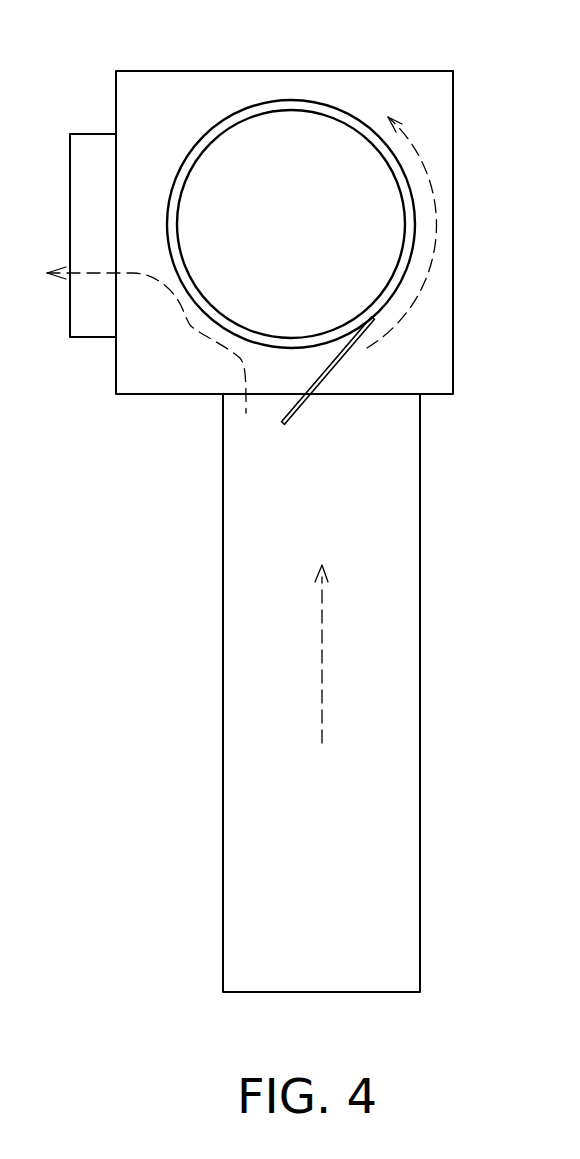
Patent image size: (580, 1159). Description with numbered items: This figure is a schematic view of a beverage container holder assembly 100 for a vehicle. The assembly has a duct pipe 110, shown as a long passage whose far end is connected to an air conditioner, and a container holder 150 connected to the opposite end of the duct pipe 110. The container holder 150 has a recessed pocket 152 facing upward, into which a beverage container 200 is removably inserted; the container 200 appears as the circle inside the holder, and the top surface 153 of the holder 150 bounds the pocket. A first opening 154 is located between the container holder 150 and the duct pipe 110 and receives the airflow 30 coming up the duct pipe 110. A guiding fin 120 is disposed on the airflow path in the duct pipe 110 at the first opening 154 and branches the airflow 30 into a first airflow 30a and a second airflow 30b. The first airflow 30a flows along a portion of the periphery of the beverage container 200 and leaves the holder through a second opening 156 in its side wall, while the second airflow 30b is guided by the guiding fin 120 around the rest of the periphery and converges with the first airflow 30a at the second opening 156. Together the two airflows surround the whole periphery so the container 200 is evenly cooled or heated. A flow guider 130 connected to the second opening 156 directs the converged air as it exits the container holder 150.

The beverage container holder assembly 100 is at (278, 526).
The duct pipe 110 is at (410, 803).
The guiding fin 120 is at (340, 362).
The flow guider 130 is at (80, 143).
The container holder 150 is at (443, 151).
The recessed pocket 152 is at (226, 136).
The top surface 153 is at (420, 105).
The first opening 154 is at (272, 378).
The second opening 156 is at (116, 182).
The beverage container 200 is at (326, 150).
The airflow 30 is at (322, 665).
The first airflow 30a is at (192, 327).
The second airflow 30b is at (418, 298).